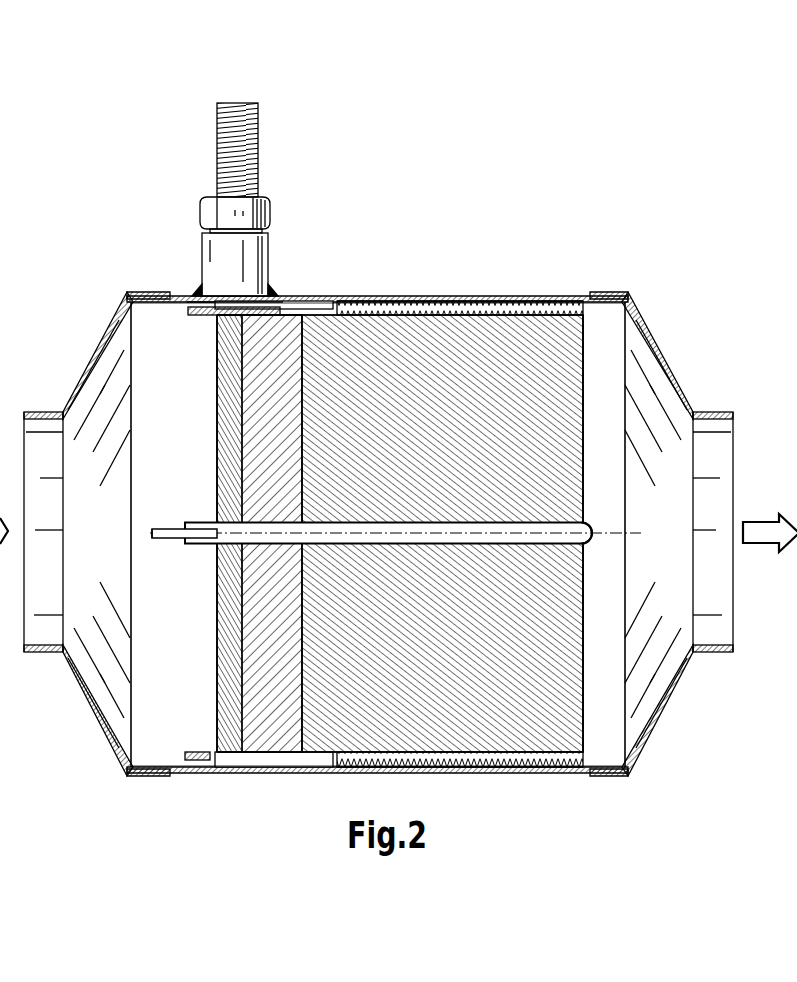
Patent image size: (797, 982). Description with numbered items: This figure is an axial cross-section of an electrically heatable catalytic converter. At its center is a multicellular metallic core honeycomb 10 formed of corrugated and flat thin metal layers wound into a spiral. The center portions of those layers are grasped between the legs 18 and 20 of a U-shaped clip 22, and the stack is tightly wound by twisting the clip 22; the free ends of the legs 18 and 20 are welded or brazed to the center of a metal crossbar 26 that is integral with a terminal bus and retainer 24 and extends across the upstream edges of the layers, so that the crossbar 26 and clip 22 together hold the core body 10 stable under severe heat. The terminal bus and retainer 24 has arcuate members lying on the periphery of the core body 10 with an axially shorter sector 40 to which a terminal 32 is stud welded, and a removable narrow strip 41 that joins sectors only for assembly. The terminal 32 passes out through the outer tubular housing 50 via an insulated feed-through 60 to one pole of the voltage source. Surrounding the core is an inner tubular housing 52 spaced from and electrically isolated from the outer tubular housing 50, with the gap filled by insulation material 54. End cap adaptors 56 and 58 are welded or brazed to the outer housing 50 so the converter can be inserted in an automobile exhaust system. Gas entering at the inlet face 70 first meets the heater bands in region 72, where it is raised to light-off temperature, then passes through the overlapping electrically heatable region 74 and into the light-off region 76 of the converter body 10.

The core honeycomb 10 is at (411, 338).
The leg of U-shaped clip 18 is at (200, 544).
The leg of U-shaped clip 20 is at (200, 522).
The U-shaped clip 22 is at (590, 524).
The terminal bus and retainer 24 is at (196, 328).
The metal crossbar 26 is at (155, 534).
The terminal 32 is at (238, 152).
The axially shorter sector 40 is at (276, 297).
The narrow strip 41 is at (196, 750).
The outer tubular housing 50 is at (497, 300).
The inner tubular housing 52 is at (493, 308).
The insulation material 54 is at (378, 304).
The end cap adaptor 56 is at (90, 359).
The end cap adaptor 58 is at (667, 355).
The insulated feed-through 60 is at (280, 242).
The inlet face 70 is at (218, 651).
The heater band region 72 is at (219, 392).
The electrically heatable region 74 is at (270, 433).
The light-off region 76 is at (545, 477).